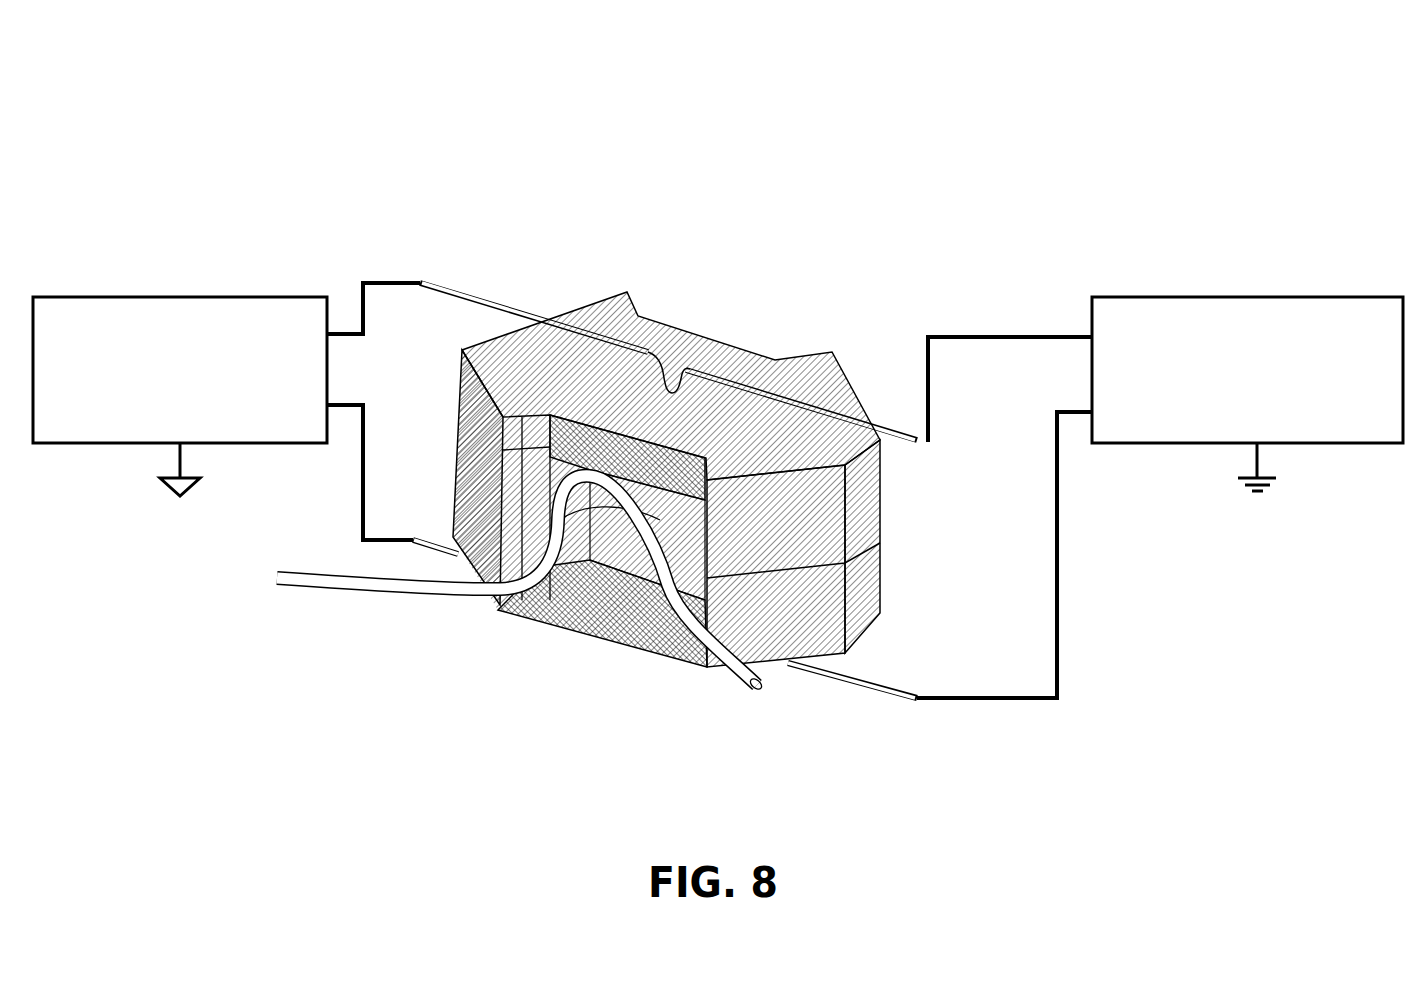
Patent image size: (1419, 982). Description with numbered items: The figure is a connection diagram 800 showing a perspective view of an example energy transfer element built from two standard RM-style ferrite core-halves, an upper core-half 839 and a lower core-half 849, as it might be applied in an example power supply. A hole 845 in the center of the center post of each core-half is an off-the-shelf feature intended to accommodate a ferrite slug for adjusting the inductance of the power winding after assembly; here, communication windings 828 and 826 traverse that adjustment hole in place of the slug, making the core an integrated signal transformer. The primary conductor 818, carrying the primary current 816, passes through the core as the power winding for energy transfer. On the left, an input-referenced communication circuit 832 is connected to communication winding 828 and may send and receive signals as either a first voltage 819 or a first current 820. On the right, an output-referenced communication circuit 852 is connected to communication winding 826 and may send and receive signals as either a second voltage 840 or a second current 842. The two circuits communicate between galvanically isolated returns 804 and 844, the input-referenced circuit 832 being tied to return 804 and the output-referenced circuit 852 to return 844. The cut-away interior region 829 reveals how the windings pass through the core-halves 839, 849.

The connection diagram 800 is at (362, 56).
The input return 804 is at (172, 492).
The primary current IP1 816 is at (300, 619).
The primary conductor 818 is at (400, 600).
The first voltage VC1 819 is at (394, 358).
The current IC1 820 is at (452, 268).
The second communication winding 826 is at (907, 441).
The first communication winding 828 is at (482, 296).
The core interior portion 829 is at (665, 509).
The input-referenced communication circuit 832 is at (145, 291).
The upper core-half 839 is at (757, 529).
The voltage VC2 840 is at (1018, 402).
The current IC2 842 is at (1017, 301).
The output return 844 is at (1235, 494).
The hole 845 is at (673, 388).
The lower core-half 849 is at (757, 624).
The output-referenced communication circuit 852 is at (1307, 290).